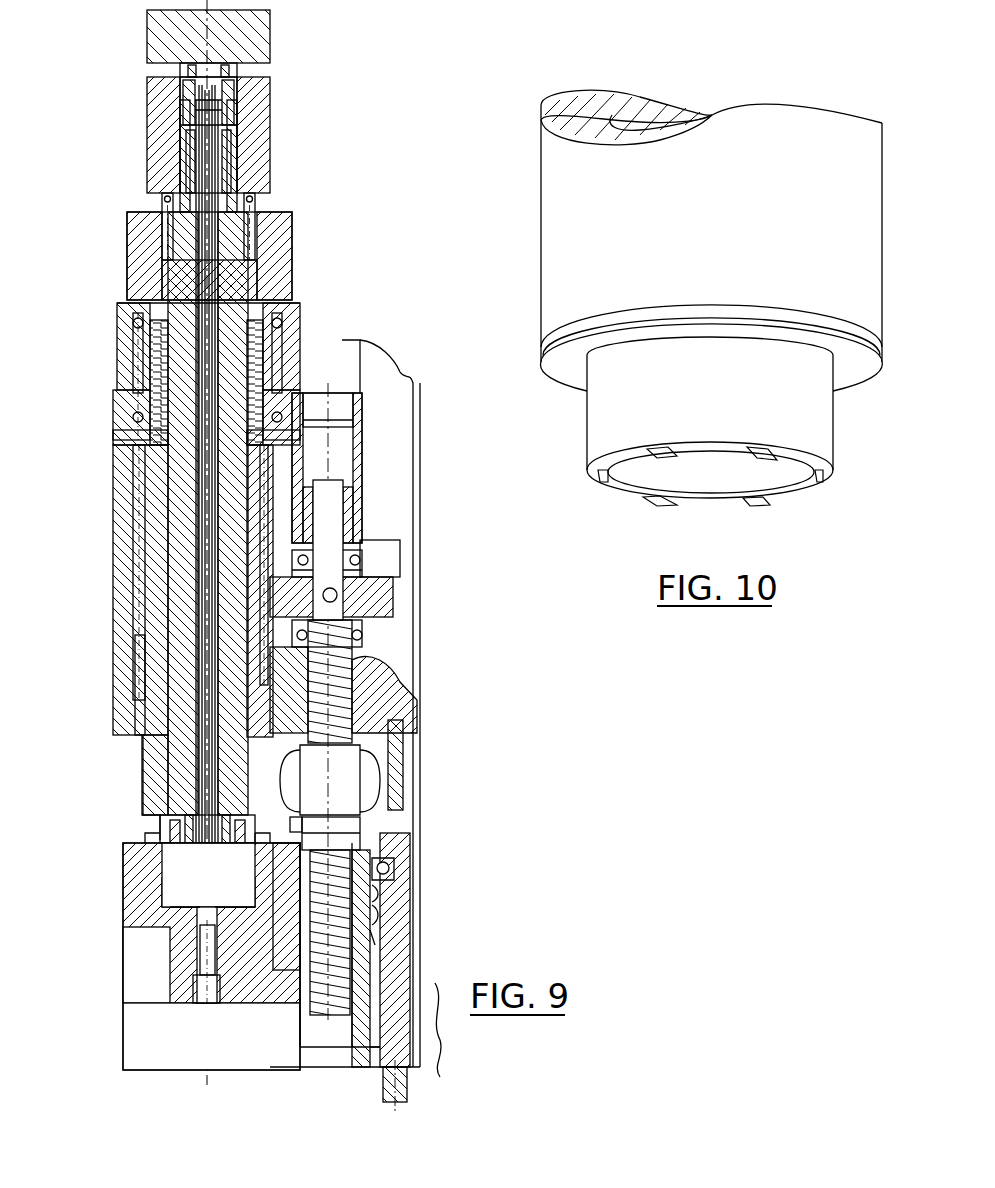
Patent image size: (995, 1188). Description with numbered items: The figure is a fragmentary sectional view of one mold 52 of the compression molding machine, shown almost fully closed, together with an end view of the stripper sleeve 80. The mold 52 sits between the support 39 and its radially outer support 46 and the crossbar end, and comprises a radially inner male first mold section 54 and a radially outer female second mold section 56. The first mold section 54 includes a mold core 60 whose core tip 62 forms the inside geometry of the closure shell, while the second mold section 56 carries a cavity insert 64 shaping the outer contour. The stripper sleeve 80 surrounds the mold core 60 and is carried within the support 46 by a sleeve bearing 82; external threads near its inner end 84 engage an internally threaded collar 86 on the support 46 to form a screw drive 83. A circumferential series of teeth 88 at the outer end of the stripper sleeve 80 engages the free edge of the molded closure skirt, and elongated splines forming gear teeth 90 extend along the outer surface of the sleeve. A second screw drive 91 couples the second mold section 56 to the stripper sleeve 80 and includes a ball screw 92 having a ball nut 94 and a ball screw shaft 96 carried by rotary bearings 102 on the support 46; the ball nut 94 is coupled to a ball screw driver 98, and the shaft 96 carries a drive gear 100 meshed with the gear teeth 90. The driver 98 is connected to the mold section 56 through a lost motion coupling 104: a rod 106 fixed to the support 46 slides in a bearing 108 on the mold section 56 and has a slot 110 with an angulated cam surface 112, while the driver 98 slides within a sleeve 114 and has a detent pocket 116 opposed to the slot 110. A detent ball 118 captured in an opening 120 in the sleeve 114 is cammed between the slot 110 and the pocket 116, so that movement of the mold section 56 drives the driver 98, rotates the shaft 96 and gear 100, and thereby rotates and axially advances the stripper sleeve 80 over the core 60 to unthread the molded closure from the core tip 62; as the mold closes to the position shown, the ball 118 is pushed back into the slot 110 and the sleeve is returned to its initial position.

In FIG. 9, the support 39 is at (430, 484).
In FIG. 9, the radially outer support 46 is at (118, 650).
In FIG. 9, the mold 52 is at (88, 815).
In FIG. 9, the first mold section 54 is at (130, 757).
In FIG. 9, the second mold section 56 is at (110, 847).
In FIG. 9, the mold core 60 is at (160, 610).
In FIG. 9, the core tip 62 is at (160, 878).
In FIG. 9, the cavity insert 64 is at (170, 920).
In FIG. 9, the stripper sleeve 80 is at (143, 778).
In FIG. 10, the stripper sleeve 80 is at (541, 240).
In FIG. 9, the sleeve bearing 82 is at (137, 703).
In FIG. 9, the screw drive 83 is at (133, 372).
In FIG. 9, the inner end of the stripper sleeve 84 is at (250, 352).
In FIG. 9, the internally threaded collar 86 is at (260, 380).
In FIG. 10, the teeth 88 is at (815, 490).
In FIG. 9, the gear teeth 90 is at (147, 533).
In FIG. 9, the screw drive 91 is at (390, 700).
In FIG. 9, the ball screw 92 is at (390, 750).
In FIG. 9, the ball nut 94 is at (350, 800).
In FIG. 9, the ball screw shaft 96 is at (342, 692).
In FIG. 9, the ball screw driver 98 is at (297, 1043).
In FIG. 9, the drive gear 100 is at (380, 607).
In FIG. 9, the rotary bearings 102 is at (358, 568).
In FIG. 9, the lost motion coupling 104 is at (397, 877).
In FIG. 9, the rod 106 is at (407, 1083).
In FIG. 9, the bearing 108 is at (413, 1053).
In FIG. 9, the slot 110 is at (390, 893).
In FIG. 9, the angulated cam surface 112 is at (387, 913).
In FIG. 9, the sleeve 114 is at (380, 1067).
In FIG. 9, the detent pocket 116 is at (367, 935).
In FIG. 9, the detent ball 118 is at (393, 873).
In FIG. 9, the opening 120 is at (377, 865).